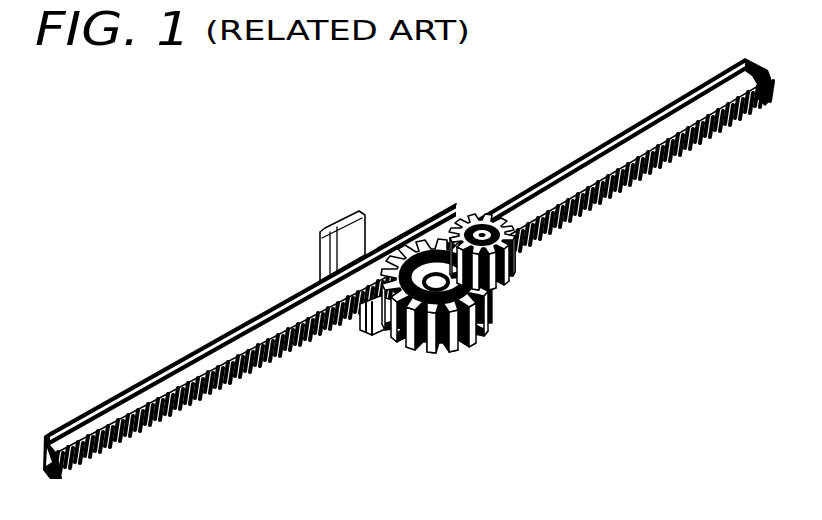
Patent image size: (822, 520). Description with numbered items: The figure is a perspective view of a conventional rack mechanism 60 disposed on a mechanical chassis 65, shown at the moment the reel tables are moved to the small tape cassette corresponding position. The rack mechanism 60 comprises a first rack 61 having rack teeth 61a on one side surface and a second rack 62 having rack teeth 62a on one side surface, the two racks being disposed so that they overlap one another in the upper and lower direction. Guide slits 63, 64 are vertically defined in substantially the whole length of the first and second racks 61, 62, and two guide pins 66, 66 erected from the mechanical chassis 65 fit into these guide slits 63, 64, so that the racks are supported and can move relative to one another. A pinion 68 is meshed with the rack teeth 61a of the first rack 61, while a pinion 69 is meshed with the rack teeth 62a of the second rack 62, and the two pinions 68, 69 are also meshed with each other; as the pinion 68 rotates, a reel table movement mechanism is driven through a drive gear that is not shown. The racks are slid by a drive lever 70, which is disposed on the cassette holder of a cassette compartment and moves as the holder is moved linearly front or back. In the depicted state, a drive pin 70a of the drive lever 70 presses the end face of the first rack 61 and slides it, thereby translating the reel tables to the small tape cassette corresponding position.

The rack mechanism 60 is at (270, 270).
The first rack 61 is at (647, 178).
The rack teeth 61a is at (713, 135).
The second rack 62 is at (104, 404).
The rack teeth 62a is at (188, 414).
The guide slit 63 is at (700, 88).
The guide slit 64 is at (198, 343).
The mechanical chassis 65 is at (615, 347).
The guide pins 66 is at (447, 207).
The pinion 68 is at (407, 348).
The pinion 69 is at (523, 262).
The drive lever 70 is at (320, 248).
The drive pin 70a is at (357, 318).